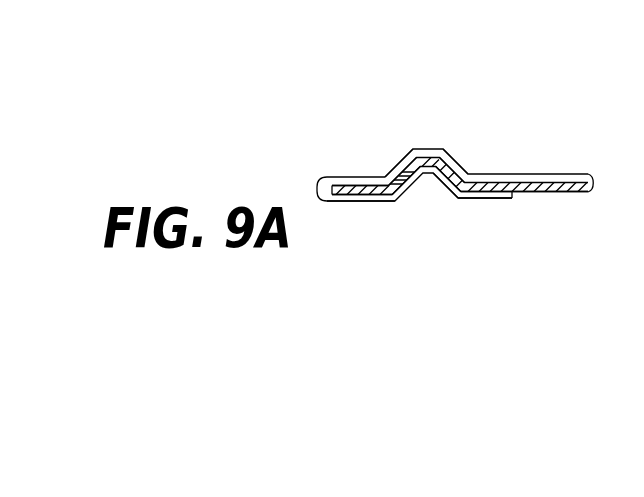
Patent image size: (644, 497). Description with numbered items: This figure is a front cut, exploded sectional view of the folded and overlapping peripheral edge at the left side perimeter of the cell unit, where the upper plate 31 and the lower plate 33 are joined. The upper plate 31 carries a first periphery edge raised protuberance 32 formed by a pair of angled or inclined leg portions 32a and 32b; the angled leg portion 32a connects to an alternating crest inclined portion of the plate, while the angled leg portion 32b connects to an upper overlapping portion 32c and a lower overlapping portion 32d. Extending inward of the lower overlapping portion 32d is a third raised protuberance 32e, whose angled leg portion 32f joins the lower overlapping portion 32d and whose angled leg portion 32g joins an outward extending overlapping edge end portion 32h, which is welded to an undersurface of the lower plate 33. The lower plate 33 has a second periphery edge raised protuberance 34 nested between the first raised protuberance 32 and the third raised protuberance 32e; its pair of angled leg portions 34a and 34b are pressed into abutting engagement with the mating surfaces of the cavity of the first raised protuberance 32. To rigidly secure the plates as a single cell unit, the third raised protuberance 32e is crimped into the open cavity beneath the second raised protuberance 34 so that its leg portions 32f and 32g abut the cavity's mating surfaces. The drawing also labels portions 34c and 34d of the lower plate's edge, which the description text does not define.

The upper plate 31 is at (523, 177).
The first periphery edge raised protuberance 32 is at (412, 174).
The angled leg portion 32a is at (452, 168).
The angled leg portion 32b is at (392, 172).
The upper overlapping portion 32c is at (343, 179).
The lower overlapping portion 32d is at (372, 203).
The third raised protuberance 32e is at (445, 186).
The angled leg portion 32f is at (420, 203).
The angled leg portion 32g is at (455, 200).
The outward extending overlapping edge end portion 32h is at (492, 203).
The lower plate 33 is at (577, 198).
The second periphery edge raised protuberance 34 is at (412, 150).
The angled leg portion 34a is at (465, 177).
The angled leg portion 34b is at (395, 165).
The outer layer portion 34c is at (353, 203).
The outer layer portion 34d is at (517, 198).